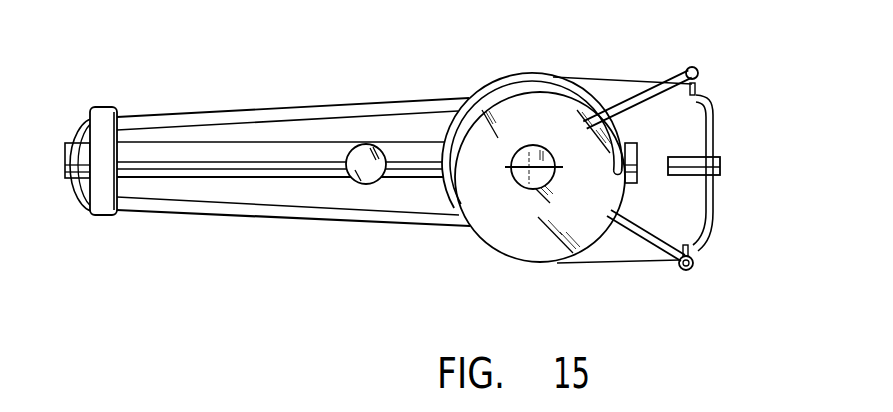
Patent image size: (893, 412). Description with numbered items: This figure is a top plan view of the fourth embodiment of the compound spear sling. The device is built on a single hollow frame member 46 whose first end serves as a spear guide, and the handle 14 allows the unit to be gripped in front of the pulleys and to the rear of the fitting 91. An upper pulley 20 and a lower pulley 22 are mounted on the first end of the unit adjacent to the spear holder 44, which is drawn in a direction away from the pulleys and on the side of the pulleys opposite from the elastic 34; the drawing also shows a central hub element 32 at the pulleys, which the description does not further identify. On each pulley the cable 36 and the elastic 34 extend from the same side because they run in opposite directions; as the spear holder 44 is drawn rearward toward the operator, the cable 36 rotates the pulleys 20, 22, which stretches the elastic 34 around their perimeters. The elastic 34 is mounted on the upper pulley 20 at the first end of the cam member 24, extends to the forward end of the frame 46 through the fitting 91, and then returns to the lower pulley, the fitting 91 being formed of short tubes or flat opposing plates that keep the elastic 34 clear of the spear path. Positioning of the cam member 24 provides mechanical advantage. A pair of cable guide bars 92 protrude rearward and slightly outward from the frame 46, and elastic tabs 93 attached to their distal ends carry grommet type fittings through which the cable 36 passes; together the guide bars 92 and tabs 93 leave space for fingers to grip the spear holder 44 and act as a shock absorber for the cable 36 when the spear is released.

The handle 14 is at (366, 184).
The upper pulley 20 is at (476, 94).
The lower pulley 22 is at (477, 243).
The cam member 24 is at (500, 92).
The hub 32 is at (538, 146).
The elastic 34 is at (272, 106).
The cable 36 is at (628, 80).
The spear holder 44 is at (778, 153).
The frame member 46 is at (195, 173).
The fitting 91 is at (90, 112).
The cable guide bars 92 is at (690, 64).
The elastic tabs 93 is at (697, 85).